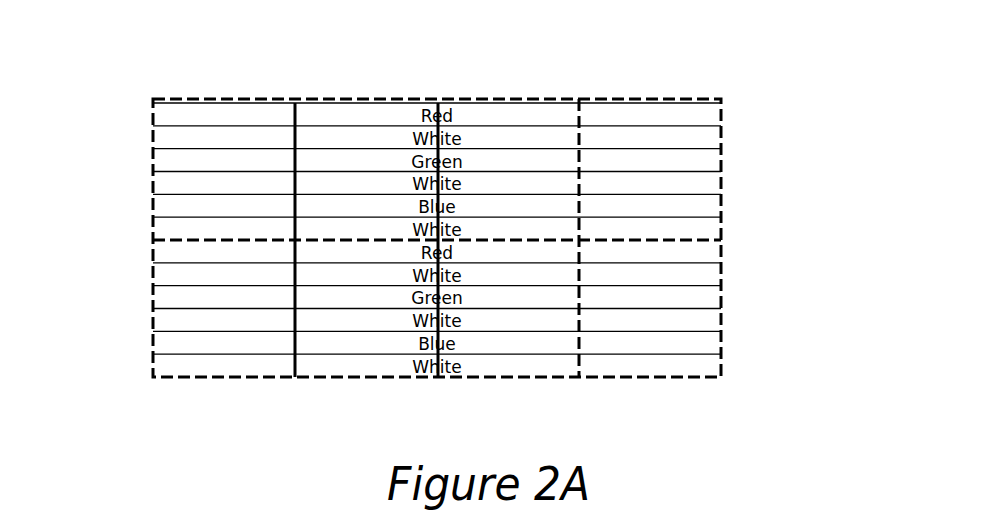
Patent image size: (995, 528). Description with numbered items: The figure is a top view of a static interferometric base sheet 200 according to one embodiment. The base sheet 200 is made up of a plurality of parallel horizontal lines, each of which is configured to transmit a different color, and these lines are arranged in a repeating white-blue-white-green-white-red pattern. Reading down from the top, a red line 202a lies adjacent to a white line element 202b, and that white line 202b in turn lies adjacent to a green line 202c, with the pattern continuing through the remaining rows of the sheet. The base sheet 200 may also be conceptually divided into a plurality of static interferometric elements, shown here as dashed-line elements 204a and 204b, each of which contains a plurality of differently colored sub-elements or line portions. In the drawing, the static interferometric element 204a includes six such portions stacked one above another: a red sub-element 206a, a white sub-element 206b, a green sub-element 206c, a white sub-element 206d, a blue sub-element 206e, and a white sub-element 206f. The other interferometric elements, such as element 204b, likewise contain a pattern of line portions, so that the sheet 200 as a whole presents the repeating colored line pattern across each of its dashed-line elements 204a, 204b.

The static interferometric base sheet 200 is at (838, 89).
The red line 202a is at (142, 117).
The white line element 202b is at (142, 140).
The green line 202c is at (142, 162).
The static interferometric element 204a is at (240, 97).
The static interferometric element 204b is at (358, 98).
The red sub-element 206a is at (180, 115).
The white sub-element 206b is at (227, 138).
The green sub-element 206c is at (181, 153).
The white sub-element 206d is at (187, 183).
The blue sub-element 206e is at (192, 208).
The white sub-element 206f is at (218, 228).